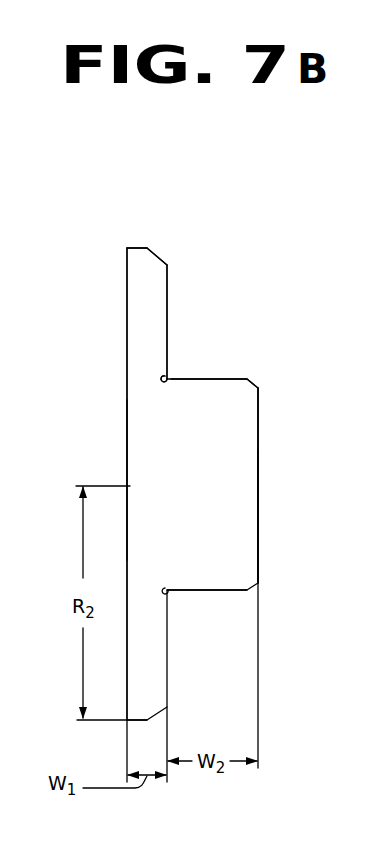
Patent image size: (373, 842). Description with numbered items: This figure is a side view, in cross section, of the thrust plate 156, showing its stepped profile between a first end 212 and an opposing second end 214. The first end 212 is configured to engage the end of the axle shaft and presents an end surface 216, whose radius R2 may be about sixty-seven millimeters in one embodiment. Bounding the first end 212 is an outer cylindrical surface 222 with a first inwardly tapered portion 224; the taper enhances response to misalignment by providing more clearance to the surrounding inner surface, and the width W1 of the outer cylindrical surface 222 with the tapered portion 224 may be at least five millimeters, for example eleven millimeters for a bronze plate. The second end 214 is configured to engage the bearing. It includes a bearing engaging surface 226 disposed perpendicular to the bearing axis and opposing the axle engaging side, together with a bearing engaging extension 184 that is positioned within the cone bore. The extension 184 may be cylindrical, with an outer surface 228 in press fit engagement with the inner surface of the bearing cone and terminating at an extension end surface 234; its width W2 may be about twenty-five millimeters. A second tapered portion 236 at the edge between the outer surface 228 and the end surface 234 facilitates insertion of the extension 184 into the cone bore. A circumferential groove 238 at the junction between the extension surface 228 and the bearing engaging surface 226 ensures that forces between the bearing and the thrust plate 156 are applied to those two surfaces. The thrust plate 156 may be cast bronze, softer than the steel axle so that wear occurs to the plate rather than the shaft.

The thrust plate 156 is at (254, 286).
The first end 212 is at (117, 467).
The second end 214 is at (263, 513).
The end surface 216 is at (126, 290).
The outer cylindrical surface 222 is at (138, 247).
The first inwardly tapered portion 224 is at (160, 258).
The bearing engaging surface 226 is at (168, 303).
The outer surface 228 is at (184, 379).
The extension end surface 234 is at (259, 452).
The second tapered portion 236 is at (255, 383).
The circumferential groove 238 is at (166, 379).
The bearing engaging extension 184 is at (227, 580).